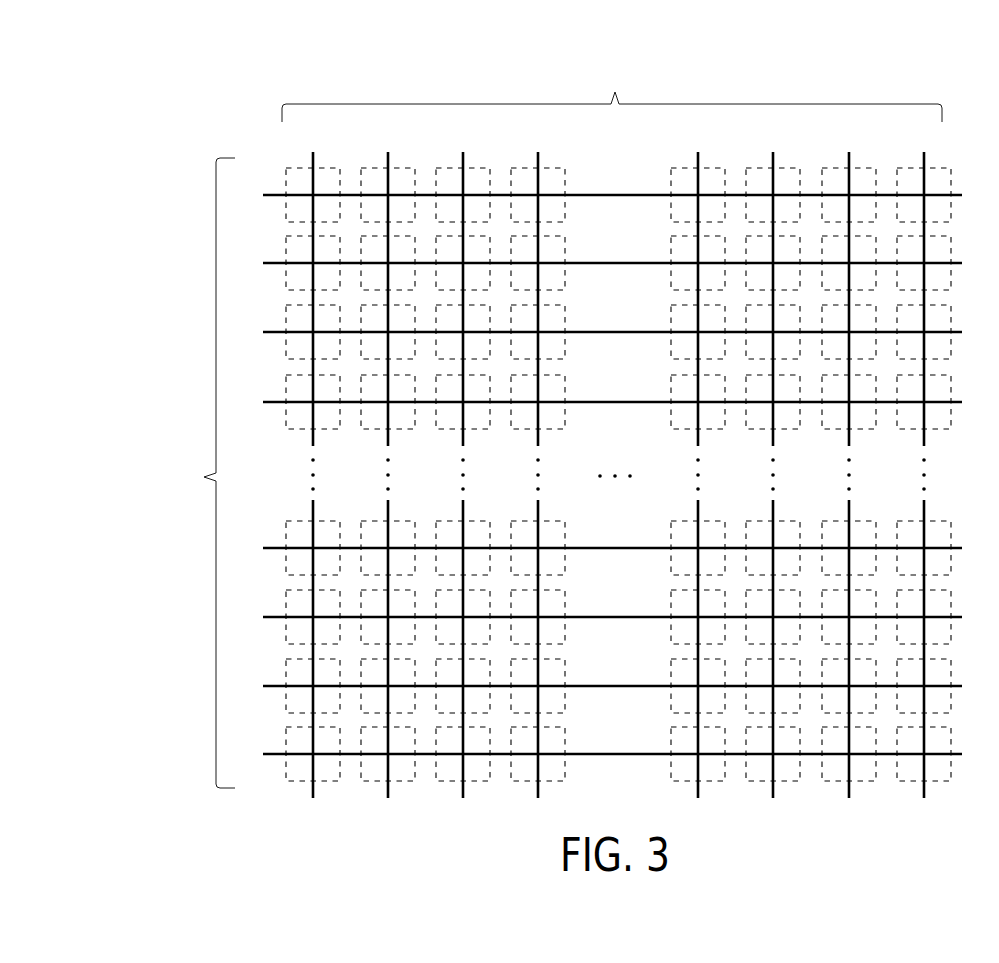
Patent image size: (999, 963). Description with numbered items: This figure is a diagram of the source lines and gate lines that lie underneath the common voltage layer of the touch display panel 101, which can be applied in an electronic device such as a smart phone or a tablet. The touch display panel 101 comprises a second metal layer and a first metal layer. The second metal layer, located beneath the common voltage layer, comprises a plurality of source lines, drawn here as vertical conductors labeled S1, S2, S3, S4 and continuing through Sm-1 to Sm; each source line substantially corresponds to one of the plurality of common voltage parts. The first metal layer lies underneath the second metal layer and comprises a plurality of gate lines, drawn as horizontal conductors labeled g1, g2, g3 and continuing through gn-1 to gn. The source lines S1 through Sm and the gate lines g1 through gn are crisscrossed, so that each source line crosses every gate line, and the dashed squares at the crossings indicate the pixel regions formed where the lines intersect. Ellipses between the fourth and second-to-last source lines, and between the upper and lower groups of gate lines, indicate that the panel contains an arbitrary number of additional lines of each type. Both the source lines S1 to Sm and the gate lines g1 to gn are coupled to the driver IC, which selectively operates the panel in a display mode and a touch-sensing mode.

The touch display panel 101 is at (183, 100).
The source line S1 is at (315, 457).
The source line S2 is at (390, 457).
The source line S3 is at (465, 457).
The source line S4 is at (540, 457).
The source line Sm-1 is at (853, 455).
The source line Sm is at (916, 455).
The gate line g1 is at (599, 188).
The gate line g2 is at (599, 256).
The gate line g3 is at (599, 325).
The gate line gn-1 is at (593, 680).
The gate line gn is at (599, 748).